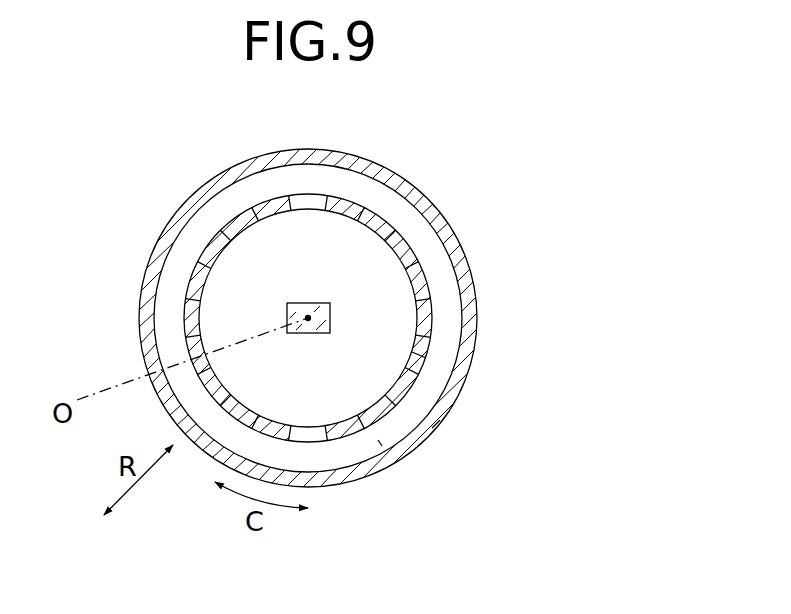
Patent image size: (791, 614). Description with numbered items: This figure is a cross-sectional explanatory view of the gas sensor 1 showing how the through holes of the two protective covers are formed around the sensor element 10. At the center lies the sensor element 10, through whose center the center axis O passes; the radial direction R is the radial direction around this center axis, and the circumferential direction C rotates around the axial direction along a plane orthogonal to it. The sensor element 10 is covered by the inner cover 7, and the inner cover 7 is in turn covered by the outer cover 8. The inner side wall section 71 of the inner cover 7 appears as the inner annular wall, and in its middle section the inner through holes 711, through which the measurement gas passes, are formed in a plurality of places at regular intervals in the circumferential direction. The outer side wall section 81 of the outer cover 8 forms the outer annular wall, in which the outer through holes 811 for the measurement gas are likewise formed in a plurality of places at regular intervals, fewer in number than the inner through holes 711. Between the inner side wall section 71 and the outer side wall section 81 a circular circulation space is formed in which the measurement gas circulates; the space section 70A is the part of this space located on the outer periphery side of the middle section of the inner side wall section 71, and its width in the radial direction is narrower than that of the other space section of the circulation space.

The gas sensor 1 is at (444, 159).
The inner cover 7 is at (200, 247).
The outer cover 8 is at (137, 304).
The sensor element 10 is at (326, 306).
The inner side wall section 71 is at (420, 365).
The inner through holes 711 is at (423, 315).
The outer side wall section 81 is at (433, 430).
The outer through holes 811 is at (475, 343).
The space section 70A is at (380, 443).